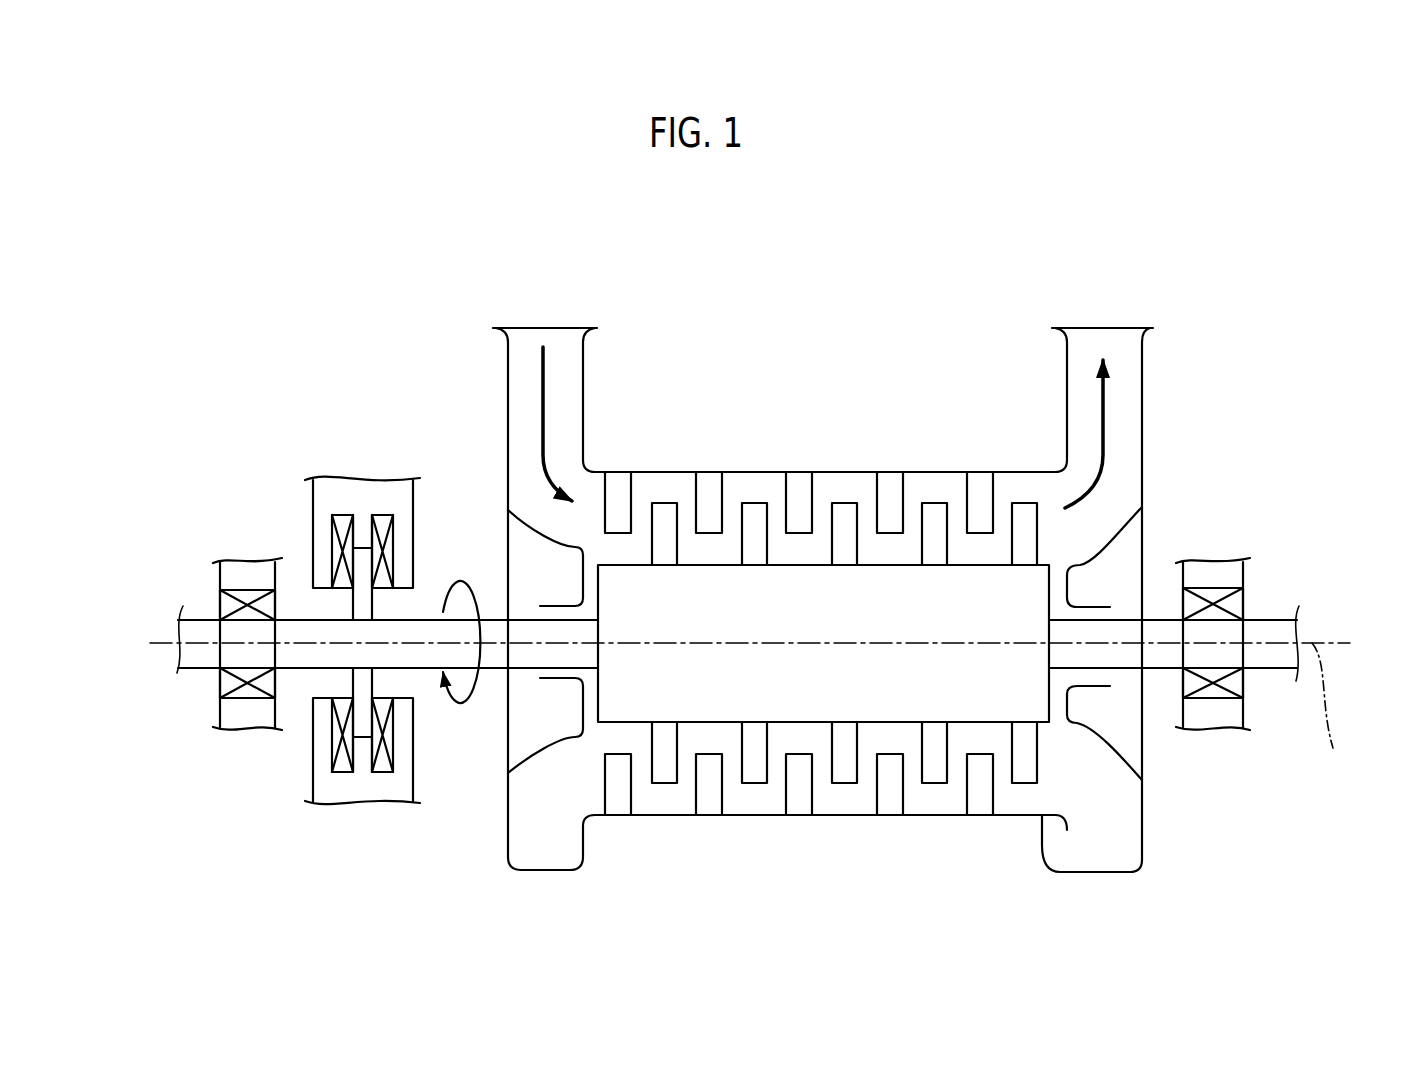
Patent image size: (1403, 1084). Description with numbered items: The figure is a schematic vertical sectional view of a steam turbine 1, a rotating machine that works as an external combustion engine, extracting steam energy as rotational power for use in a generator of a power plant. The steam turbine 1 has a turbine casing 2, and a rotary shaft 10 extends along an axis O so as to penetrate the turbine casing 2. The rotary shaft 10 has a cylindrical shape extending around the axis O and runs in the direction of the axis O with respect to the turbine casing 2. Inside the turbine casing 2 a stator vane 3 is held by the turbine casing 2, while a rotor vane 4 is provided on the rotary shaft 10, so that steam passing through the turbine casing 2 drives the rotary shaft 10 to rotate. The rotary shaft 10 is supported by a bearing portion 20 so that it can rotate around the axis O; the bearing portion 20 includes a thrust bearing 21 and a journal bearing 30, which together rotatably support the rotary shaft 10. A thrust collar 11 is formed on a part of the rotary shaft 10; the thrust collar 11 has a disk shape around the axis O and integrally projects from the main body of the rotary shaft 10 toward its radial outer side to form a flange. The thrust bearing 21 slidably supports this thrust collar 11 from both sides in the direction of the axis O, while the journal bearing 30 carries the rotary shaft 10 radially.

The steam turbine 1 is at (877, 569).
The turbine casing 2 is at (585, 371).
The stator vane 3 is at (616, 476).
The rotor vane 4 is at (663, 778).
The rotary shaft 10 is at (290, 660).
The thrust collar 11 is at (362, 548).
The bearing portion 20 is at (328, 580).
The thrust bearing 21 is at (320, 452).
The journal bearing 30 is at (201, 574).
The axis O is at (750, 713).